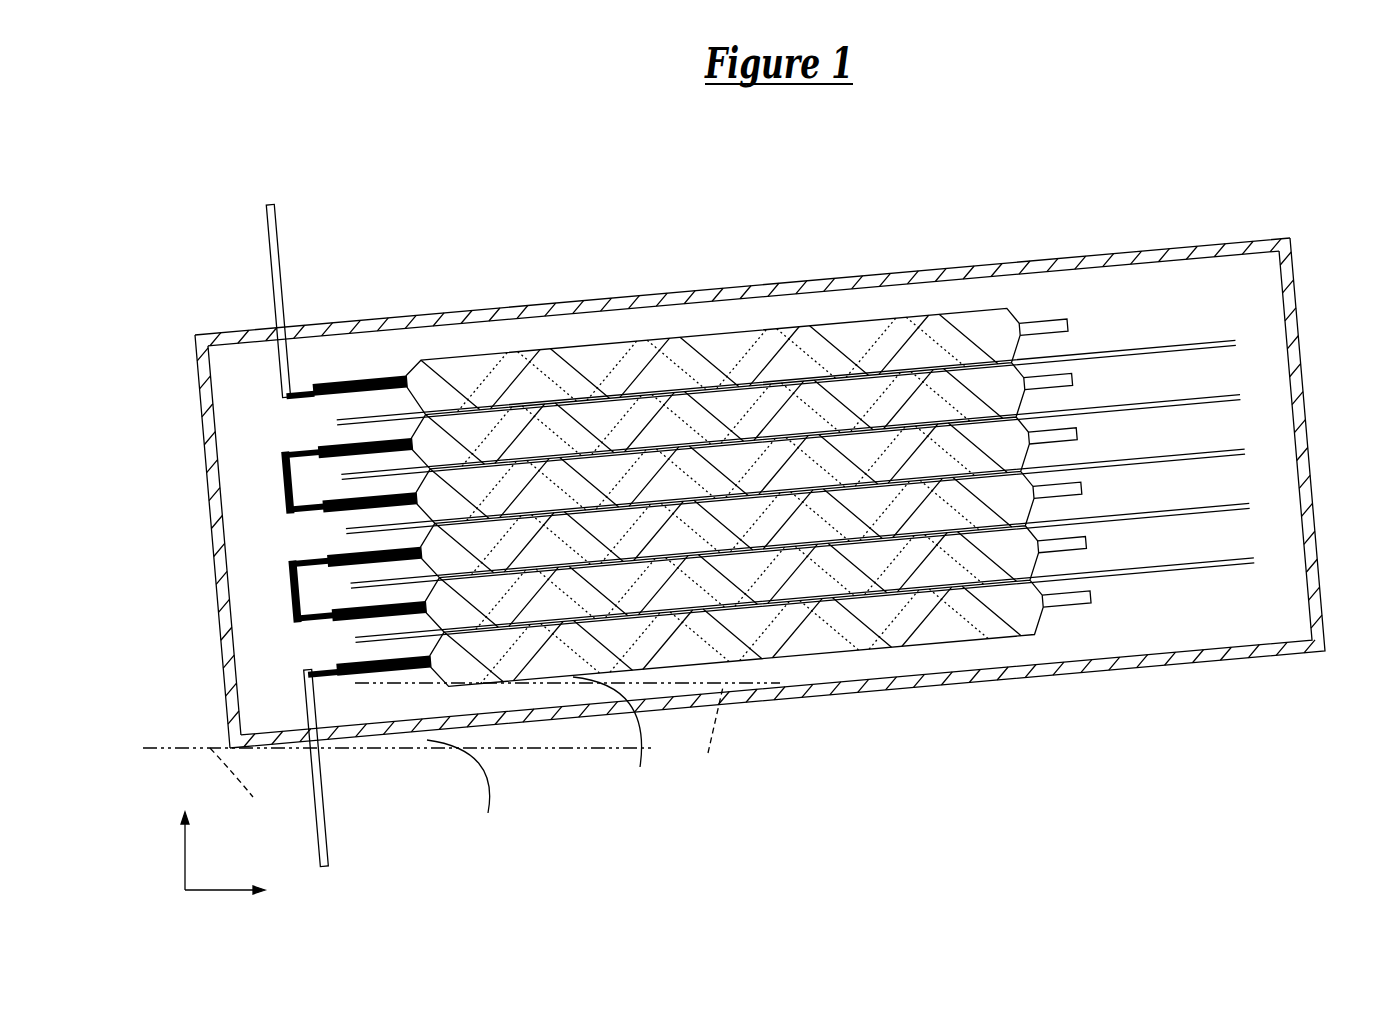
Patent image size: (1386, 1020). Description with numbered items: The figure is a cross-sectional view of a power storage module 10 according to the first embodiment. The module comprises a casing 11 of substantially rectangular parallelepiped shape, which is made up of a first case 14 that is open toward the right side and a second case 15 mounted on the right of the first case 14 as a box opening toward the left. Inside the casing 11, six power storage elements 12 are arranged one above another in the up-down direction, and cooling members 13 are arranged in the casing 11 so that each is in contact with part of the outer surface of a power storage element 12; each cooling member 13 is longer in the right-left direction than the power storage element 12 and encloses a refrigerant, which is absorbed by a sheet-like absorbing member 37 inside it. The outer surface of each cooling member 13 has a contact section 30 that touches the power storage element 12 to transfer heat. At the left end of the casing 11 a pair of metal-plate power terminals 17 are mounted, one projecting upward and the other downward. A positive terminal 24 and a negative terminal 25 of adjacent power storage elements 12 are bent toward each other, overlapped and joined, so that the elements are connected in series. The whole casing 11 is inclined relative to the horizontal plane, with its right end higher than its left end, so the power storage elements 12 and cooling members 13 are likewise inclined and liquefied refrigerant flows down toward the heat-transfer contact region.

The power storage module 10 is at (1243, 188).
The casing 11 is at (1168, 247).
The power storage element 12 is at (958, 460).
The cooling member 13 is at (1238, 452).
The first case 14 is at (204, 362).
The second case 15 is at (1092, 252).
The power terminal 17 is at (277, 243).
The positive terminal 24 is at (285, 490).
The negative terminal 25 is at (268, 372).
The contact section 30 is at (670, 495).
The absorbing member 37 is at (815, 500).